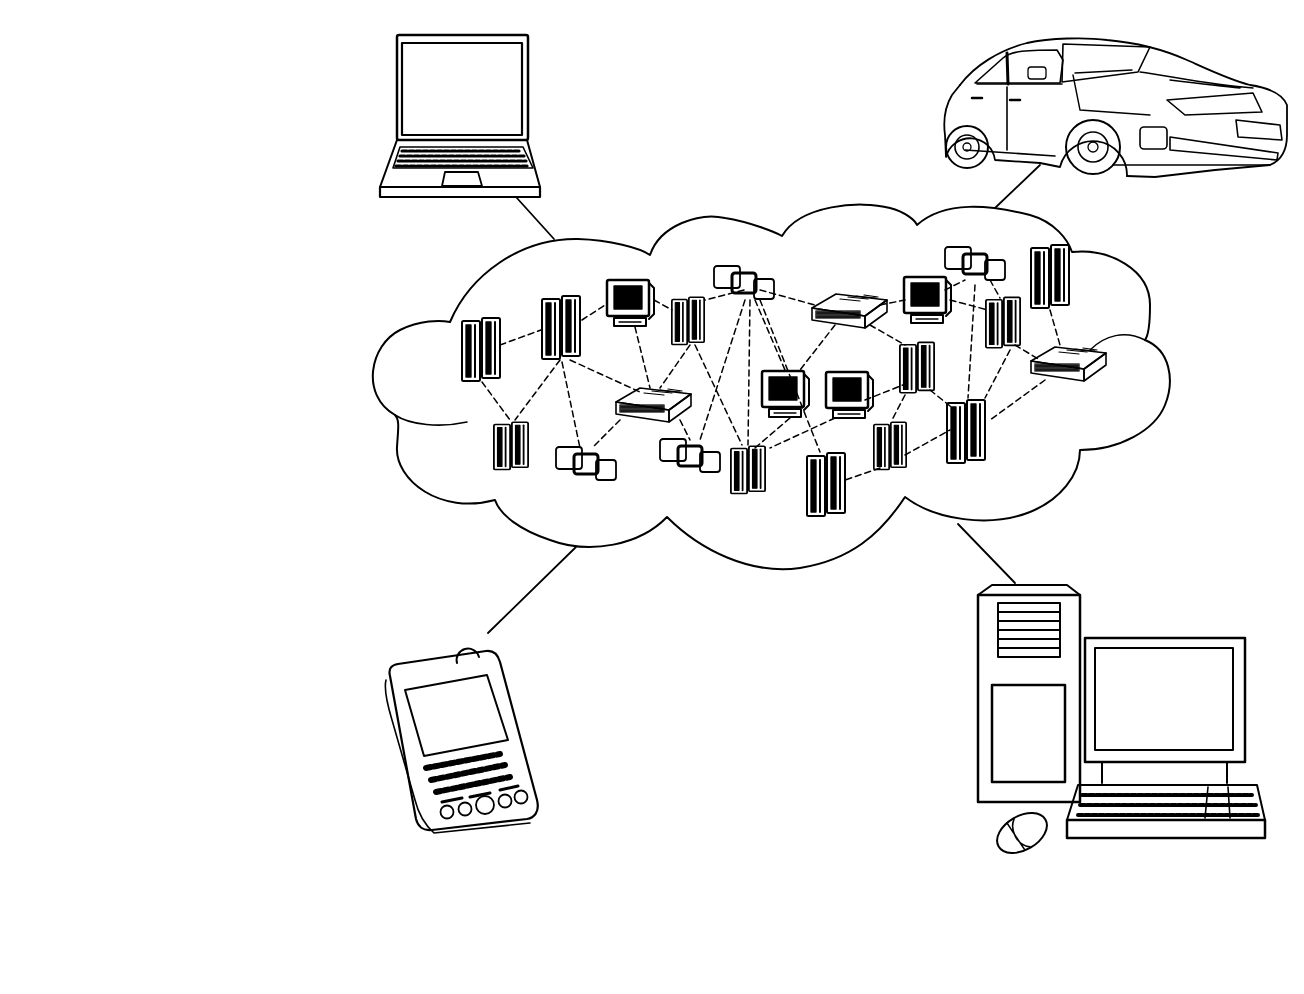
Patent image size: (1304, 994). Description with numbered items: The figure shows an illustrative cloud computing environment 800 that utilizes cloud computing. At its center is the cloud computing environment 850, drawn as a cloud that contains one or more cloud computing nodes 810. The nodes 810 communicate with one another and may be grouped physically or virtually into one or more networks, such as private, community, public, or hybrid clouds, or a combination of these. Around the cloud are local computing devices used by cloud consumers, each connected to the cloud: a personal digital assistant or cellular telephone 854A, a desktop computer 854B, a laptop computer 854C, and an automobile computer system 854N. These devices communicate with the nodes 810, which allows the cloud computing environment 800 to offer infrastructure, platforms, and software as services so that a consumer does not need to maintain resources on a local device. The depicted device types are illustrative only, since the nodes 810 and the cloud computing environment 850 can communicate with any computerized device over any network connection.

The cloud computing environment 800 is at (236, 62).
The cloud computing nodes 810 is at (1114, 390).
The cloud computing environment 850 is at (1163, 360).
The personal digital assistant or cellular telephone 854A is at (519, 731).
The desktop computer 854B is at (1162, 637).
The laptop computer 854C is at (529, 95).
The automobile computer system 854N is at (950, 113).